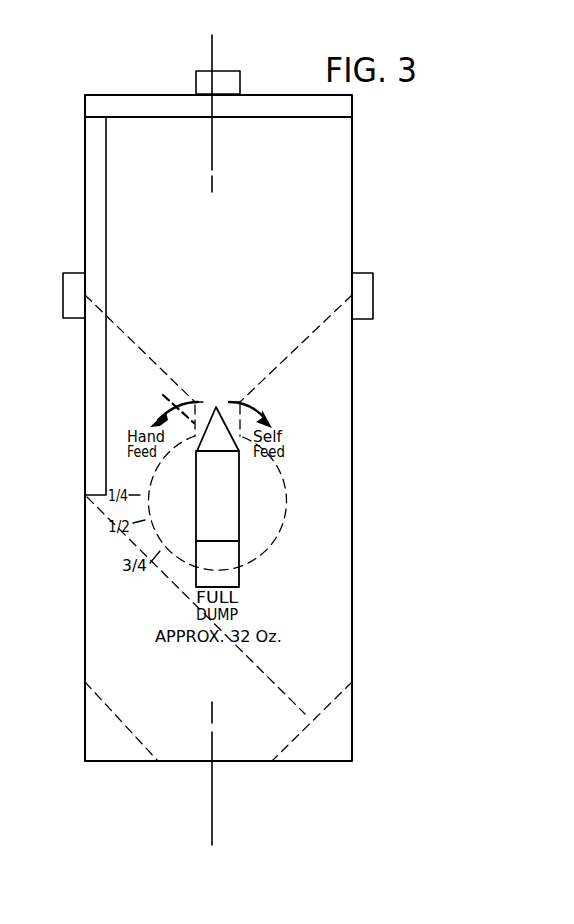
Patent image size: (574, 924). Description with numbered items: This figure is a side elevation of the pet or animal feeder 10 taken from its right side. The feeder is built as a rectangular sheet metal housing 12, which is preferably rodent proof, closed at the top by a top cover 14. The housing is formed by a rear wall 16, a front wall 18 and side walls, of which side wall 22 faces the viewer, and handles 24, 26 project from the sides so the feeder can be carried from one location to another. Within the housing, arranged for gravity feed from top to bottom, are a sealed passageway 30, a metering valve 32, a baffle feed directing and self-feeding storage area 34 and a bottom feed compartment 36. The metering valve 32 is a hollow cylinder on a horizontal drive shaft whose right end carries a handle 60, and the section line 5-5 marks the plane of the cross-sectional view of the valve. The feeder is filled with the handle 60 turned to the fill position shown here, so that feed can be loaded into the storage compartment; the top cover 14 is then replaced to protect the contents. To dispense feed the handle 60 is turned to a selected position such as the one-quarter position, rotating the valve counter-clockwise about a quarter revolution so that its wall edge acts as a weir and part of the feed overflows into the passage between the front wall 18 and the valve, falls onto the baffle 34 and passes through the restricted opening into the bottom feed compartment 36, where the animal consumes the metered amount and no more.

The section line 5- 5 is at (292, 50).
The pet or animal feeder 10 is at (133, 60).
The sheet metal housing 12 is at (360, 197).
The top cover 14 is at (123, 94).
The rear wall 16 is at (352, 360).
The front wall 18 is at (83, 423).
The side wall 22 is at (327, 155).
The handle 24 is at (63, 272).
The handle 26 is at (372, 273).
The sealed passageway 30 is at (163, 395).
The metering valve 32 is at (280, 520).
The baffle feed directing and self-feeding storage area 34 is at (325, 613).
The bottom feed compartment 36 is at (212, 733).
The handle 60 is at (239, 495).